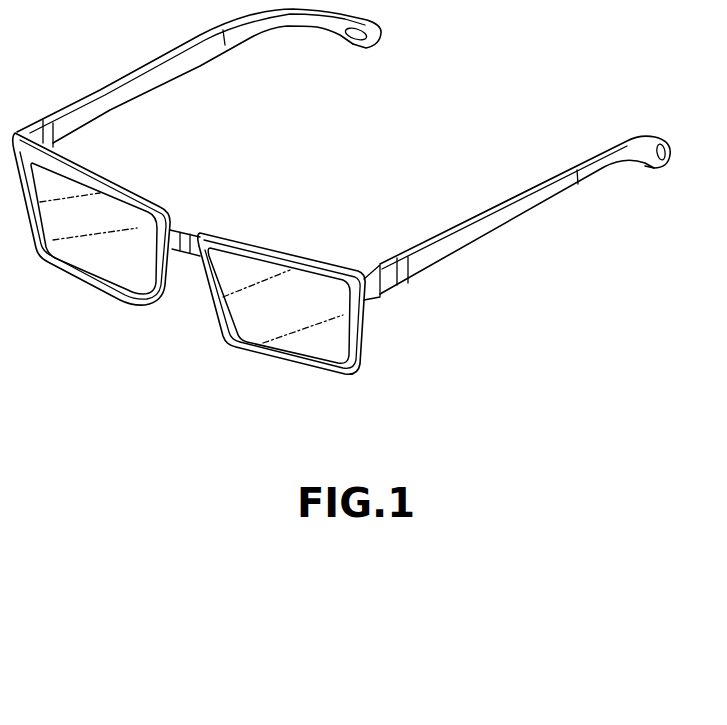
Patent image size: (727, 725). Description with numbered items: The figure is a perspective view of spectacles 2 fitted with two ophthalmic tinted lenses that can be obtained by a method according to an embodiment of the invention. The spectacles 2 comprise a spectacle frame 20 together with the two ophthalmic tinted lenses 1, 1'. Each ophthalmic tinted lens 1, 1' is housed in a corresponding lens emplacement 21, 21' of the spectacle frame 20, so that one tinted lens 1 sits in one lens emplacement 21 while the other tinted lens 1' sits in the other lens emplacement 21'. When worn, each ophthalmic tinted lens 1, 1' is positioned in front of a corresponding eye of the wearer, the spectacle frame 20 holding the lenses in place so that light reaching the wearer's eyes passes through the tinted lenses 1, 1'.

The ophthalmic tinted lens 1 is at (94, 260).
The ophthalmic tinted lens 1' is at (279, 347).
The spectacles 2 is at (503, 297).
The spectacle frame 20 is at (123, 78).
The lens emplacement 21 is at (91, 261).
The lens emplacement 21' is at (281, 268).